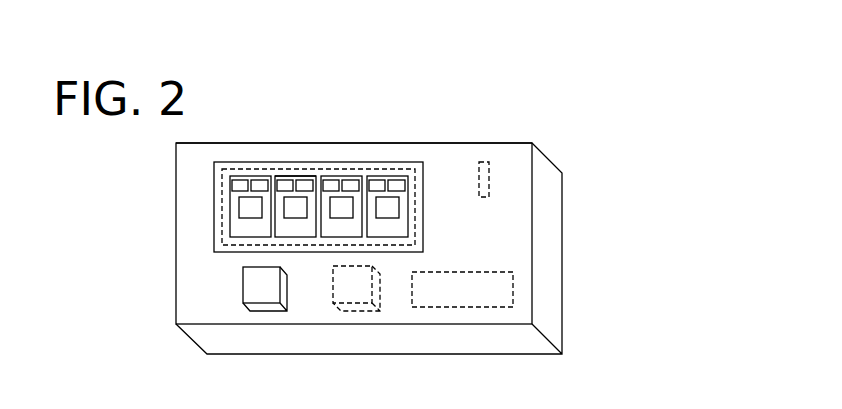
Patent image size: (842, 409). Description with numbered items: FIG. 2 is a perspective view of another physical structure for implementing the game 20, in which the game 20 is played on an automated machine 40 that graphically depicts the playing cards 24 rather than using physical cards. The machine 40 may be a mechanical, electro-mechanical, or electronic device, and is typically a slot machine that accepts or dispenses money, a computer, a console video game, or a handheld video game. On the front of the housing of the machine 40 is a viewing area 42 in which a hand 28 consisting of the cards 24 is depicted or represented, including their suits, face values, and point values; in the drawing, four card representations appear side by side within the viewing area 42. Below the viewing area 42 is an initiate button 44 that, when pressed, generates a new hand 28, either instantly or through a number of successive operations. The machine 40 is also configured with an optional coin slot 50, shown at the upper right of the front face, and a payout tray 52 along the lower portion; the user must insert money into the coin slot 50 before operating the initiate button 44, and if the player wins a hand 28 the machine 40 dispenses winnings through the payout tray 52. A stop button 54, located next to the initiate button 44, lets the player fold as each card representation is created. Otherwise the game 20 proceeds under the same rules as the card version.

The game 20 is at (166, 199).
The playing cards 24 is at (295, 176).
The hand 28 is at (308, 170).
The automated machine 40 is at (458, 141).
The viewing area 42 is at (332, 159).
The initiate button 44 is at (263, 297).
The coin slot 50 is at (485, 173).
The payout tray 52 is at (472, 302).
The stop button 54 is at (354, 298).